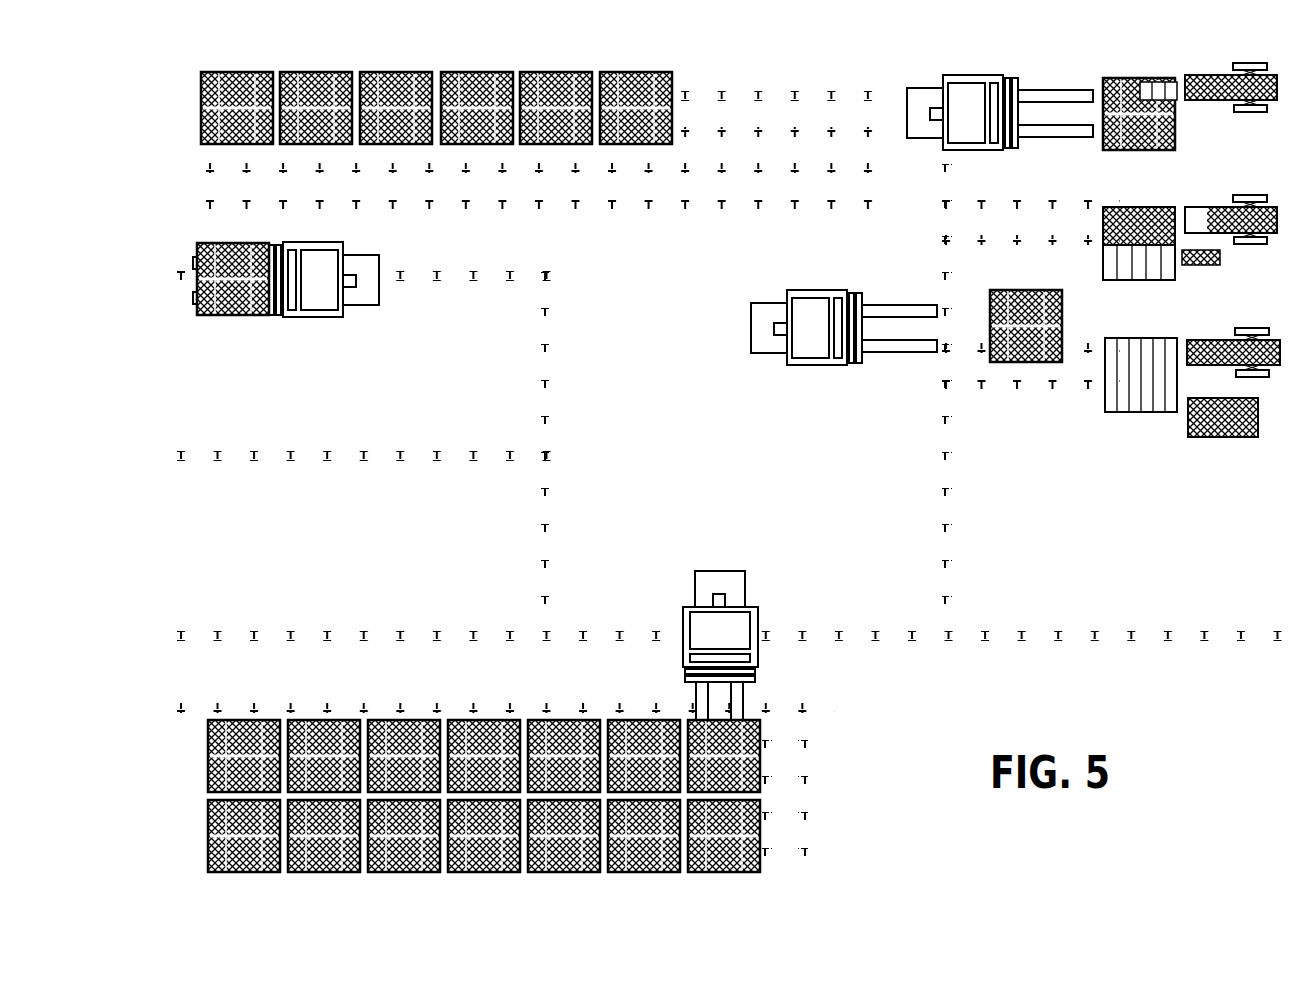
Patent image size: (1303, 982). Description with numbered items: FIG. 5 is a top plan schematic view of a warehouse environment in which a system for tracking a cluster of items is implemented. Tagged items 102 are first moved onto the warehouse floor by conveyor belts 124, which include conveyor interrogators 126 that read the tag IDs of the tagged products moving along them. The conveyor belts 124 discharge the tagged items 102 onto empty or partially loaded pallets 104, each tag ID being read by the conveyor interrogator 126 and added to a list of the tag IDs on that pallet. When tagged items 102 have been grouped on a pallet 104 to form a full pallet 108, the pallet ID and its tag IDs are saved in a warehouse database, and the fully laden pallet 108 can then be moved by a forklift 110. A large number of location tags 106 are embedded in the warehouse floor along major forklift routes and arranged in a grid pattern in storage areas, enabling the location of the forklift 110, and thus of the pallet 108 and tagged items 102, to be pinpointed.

The tagged items 102 is at (1230, 440).
The pallets 104 is at (1105, 405).
The location tags 106 is at (955, 493).
The full pallet 108 is at (528, 72).
The forklift 110 is at (920, 88).
The conveyor belts 124 is at (1213, 100).
The conveyor interrogators 126 is at (1230, 207).